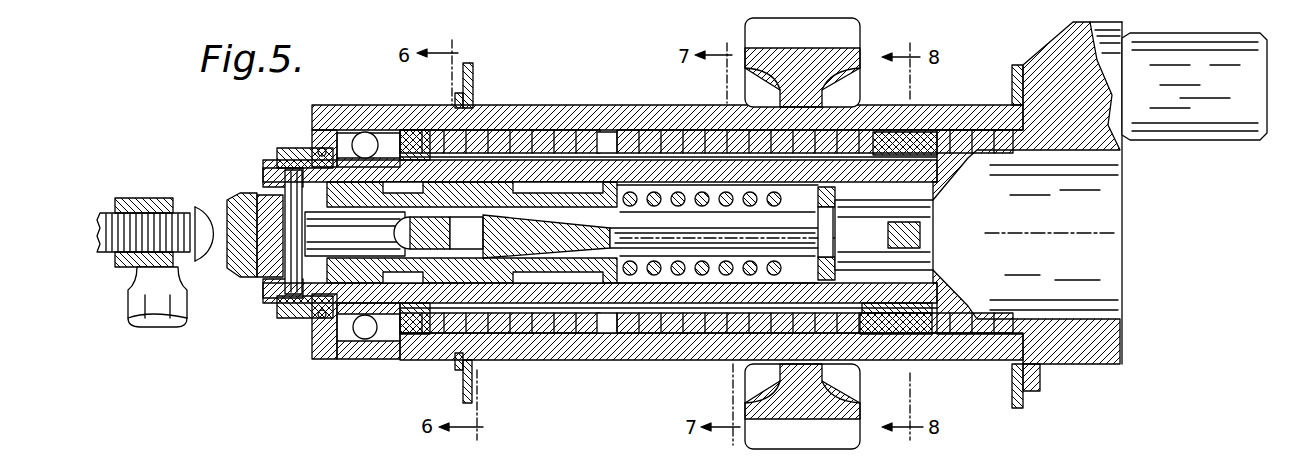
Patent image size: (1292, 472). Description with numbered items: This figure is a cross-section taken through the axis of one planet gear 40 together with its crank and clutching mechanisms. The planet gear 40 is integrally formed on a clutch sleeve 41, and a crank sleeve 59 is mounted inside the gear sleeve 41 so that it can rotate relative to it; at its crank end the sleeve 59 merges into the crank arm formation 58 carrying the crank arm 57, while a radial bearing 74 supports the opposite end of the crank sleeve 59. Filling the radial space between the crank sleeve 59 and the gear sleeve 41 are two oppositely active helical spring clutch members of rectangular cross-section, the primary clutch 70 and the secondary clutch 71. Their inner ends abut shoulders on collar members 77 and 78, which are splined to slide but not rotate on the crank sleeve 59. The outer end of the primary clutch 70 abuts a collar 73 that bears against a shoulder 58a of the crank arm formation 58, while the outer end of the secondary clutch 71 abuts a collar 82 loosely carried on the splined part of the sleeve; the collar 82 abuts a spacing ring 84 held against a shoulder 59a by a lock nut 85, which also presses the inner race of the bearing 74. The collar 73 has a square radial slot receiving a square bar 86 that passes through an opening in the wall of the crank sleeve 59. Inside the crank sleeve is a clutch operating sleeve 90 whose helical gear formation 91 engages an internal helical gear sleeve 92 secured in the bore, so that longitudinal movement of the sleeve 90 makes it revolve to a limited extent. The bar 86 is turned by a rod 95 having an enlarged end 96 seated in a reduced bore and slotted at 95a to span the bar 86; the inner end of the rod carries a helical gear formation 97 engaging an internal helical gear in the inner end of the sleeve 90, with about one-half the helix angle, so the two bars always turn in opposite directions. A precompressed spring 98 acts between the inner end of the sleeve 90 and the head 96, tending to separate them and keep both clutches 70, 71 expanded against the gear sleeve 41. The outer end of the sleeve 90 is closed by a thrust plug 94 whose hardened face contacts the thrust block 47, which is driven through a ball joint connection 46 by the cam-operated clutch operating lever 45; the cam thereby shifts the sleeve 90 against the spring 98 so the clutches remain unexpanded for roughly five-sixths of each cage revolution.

The planet gear 40 is at (822, 435).
The clutch sleeve 41 is at (637, 107).
The clutch operating lever 45 is at (160, 200).
The ball joint connection 46 is at (213, 300).
The thrust block 47 is at (207, 208).
The shaft 57 is at (1167, 117).
The body 58 is at (1090, 130).
The shoulder 58a is at (915, 137).
The crank sleeve 59 is at (437, 290).
The shoulder 59a is at (330, 316).
The primary spring clutch member 70 is at (830, 133).
The secondary spring clutch member 71 is at (550, 140).
The collar member 73 is at (898, 336).
The radial bearing 74 is at (322, 150).
The collar member 77 is at (707, 137).
The collar member 78 is at (612, 137).
The collar 82 is at (415, 132).
The spacing ring 84 is at (365, 140).
The lock nut 85 is at (297, 148).
The square bar 86 is at (925, 212).
The clutch operating sleeve member 90 is at (500, 262).
The helical gear formation 91 is at (262, 280).
The sleeve member 92 is at (262, 190).
The thrust plug 94 is at (240, 195).
The rod 95 is at (745, 248).
The slot 95a is at (962, 232).
The enlarged end 96 is at (937, 262).
The helical gear formation 97 is at (528, 248).
The precompressed spring member 98 is at (664, 275).